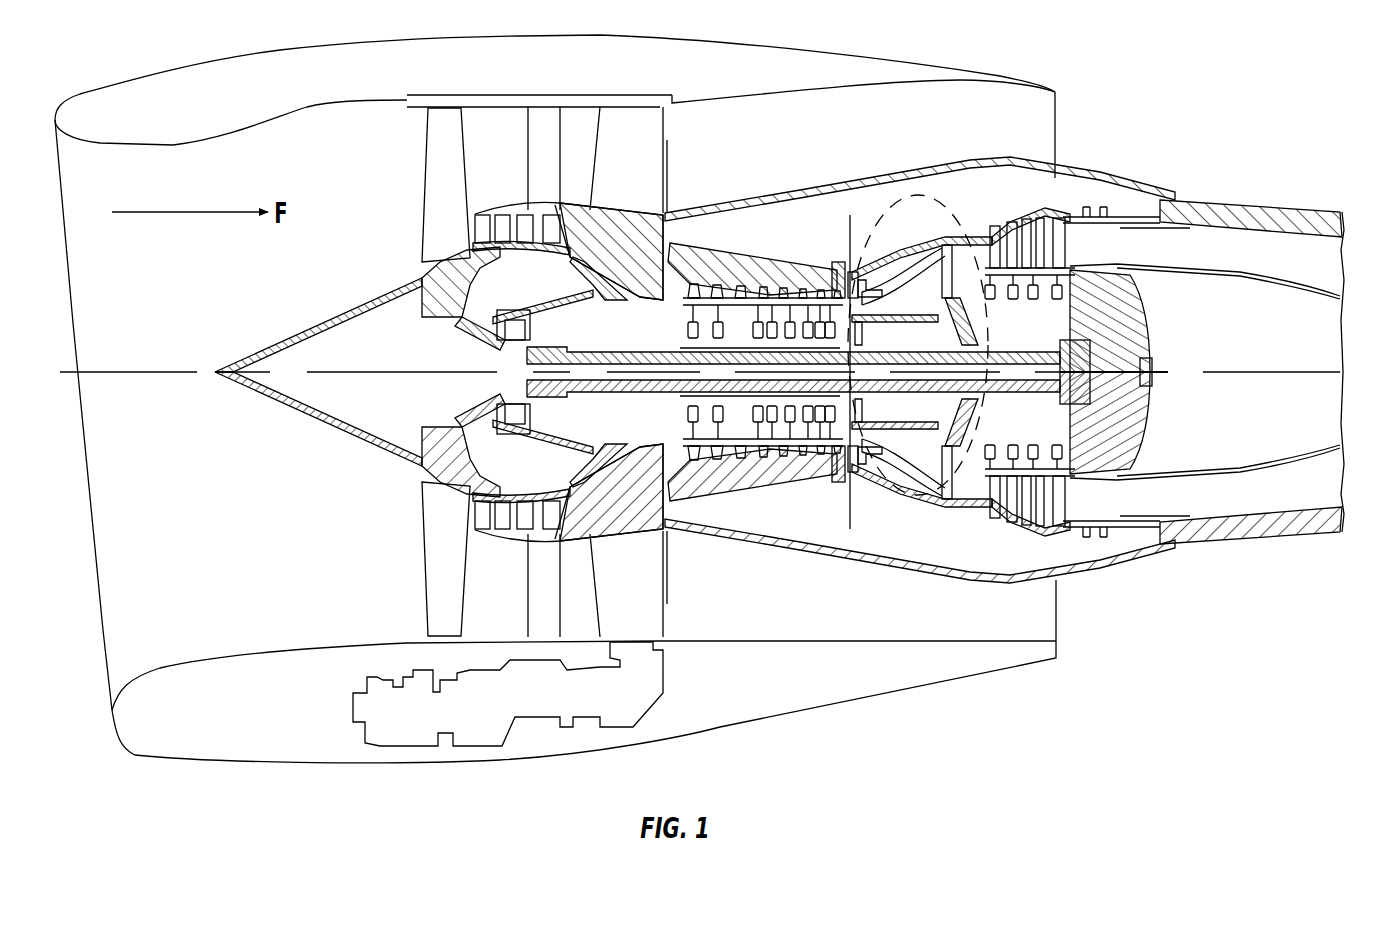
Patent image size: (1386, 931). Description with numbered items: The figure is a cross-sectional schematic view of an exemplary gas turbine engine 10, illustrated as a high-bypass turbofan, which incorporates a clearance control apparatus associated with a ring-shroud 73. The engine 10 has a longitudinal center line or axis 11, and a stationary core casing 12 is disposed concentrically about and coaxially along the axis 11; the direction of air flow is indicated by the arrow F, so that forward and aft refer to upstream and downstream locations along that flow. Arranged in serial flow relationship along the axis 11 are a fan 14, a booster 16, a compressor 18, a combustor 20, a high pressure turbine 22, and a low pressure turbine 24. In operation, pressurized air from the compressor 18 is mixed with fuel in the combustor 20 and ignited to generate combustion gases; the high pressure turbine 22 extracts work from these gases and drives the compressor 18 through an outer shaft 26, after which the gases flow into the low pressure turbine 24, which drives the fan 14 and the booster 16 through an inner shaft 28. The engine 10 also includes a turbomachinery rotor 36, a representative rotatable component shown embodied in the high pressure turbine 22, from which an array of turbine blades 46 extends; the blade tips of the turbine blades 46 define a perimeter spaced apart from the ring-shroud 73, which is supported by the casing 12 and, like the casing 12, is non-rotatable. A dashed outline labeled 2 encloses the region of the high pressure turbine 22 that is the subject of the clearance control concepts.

The combustor section 2 is at (872, 168).
The gas turbine engine 10 is at (1082, 130).
The longitudinal center line or axis 11 is at (112, 372).
The stationary core casing 12 is at (680, 213).
The fan 14 is at (368, 482).
The booster 16 is at (497, 532).
The compressor 18 is at (728, 290).
The combustor 20 is at (905, 278).
The high pressure turbine 22 is at (985, 245).
The low pressure turbine 24 is at (1132, 250).
The outer shaft 26 is at (895, 430).
The inner shaft 28 is at (577, 356).
The turbomachinery rotor 36 is at (1030, 517).
The turbine blades 46 is at (958, 265).
The ring-shroud 73 is at (960, 290).